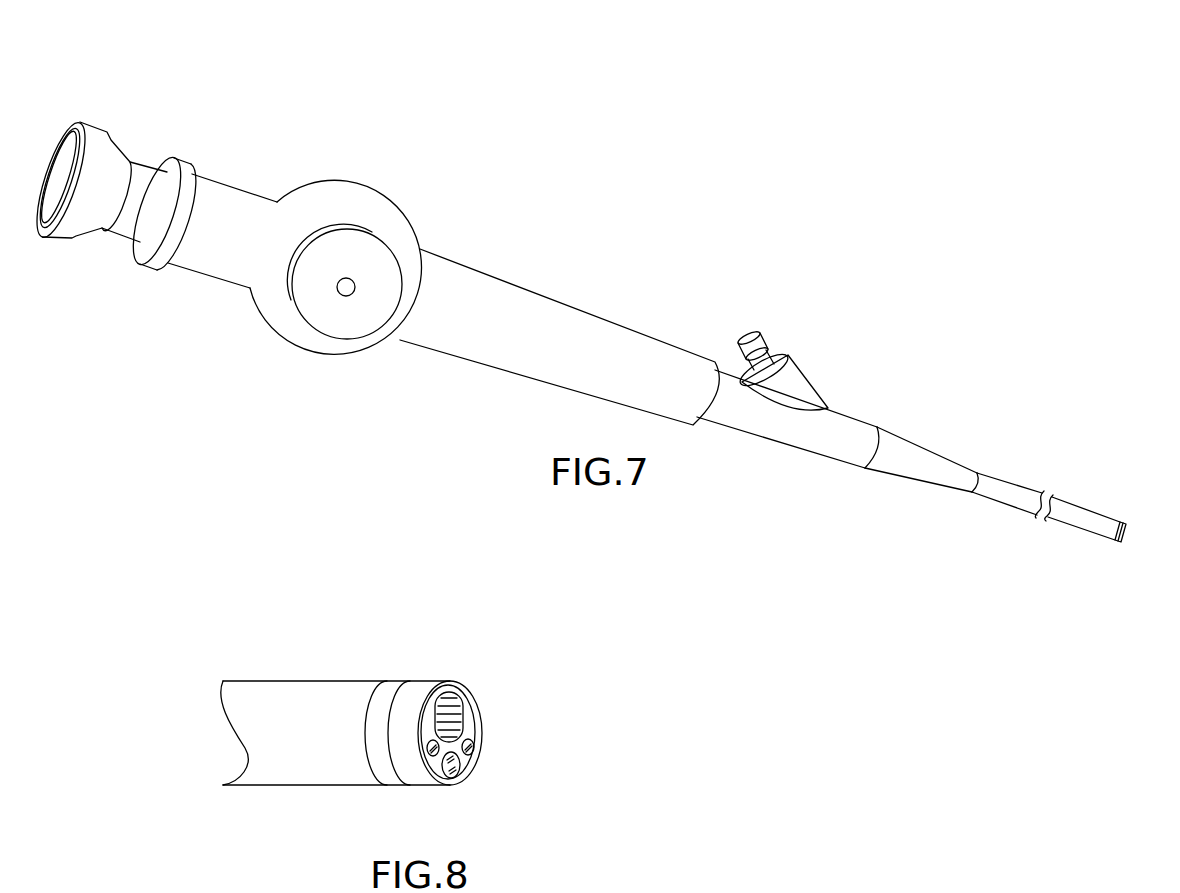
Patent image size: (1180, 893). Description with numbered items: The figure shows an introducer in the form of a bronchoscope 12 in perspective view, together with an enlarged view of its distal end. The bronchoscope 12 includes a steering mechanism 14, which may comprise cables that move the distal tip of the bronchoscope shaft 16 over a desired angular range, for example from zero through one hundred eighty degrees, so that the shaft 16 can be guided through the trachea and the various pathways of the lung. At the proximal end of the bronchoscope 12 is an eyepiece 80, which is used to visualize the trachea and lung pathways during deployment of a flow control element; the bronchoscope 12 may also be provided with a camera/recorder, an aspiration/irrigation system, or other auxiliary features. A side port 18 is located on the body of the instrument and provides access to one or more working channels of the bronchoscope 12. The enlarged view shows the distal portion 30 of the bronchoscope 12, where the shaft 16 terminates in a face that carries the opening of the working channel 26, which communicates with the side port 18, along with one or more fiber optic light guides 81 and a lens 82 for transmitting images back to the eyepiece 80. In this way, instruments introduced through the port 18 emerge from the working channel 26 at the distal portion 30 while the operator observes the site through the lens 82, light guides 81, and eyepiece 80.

In FIG. 7, the bronchoscope 12 is at (508, 110).
In FIG. 7, the steering mechanism 14 is at (348, 197).
In FIG. 7, the shaft 16 is at (1013, 498).
In FIG. 8, the shaft 16 is at (302, 768).
In FIG. 7, the port 18 is at (793, 378).
In FIG. 7, the eyepiece 80 is at (125, 227).
In FIG. 8, the distal portion 30 is at (264, 650).
In FIG. 8, the fiber optic light guides 81 is at (428, 742).
In FIG. 8, the working channel 26 is at (452, 710).
In FIG. 8, the lens 82 is at (458, 772).